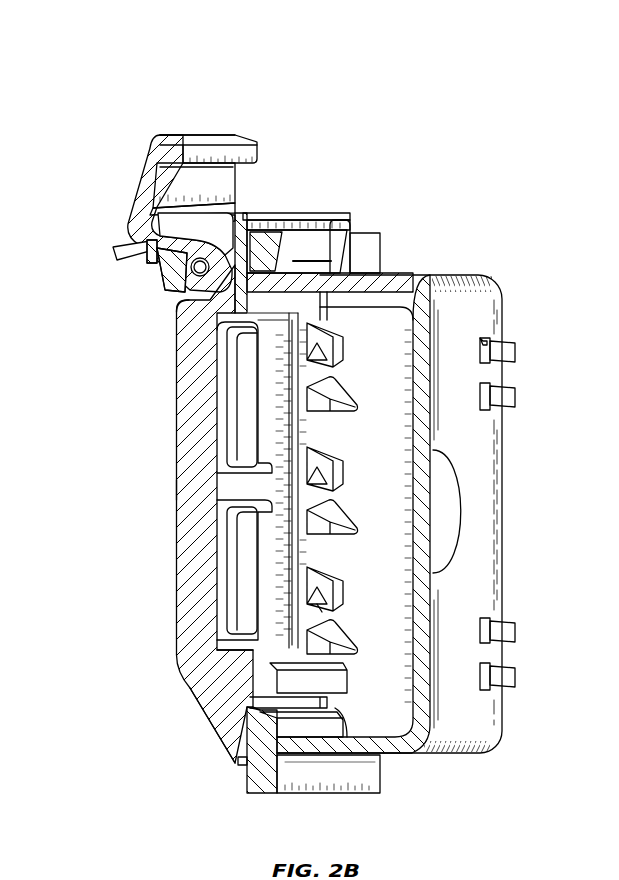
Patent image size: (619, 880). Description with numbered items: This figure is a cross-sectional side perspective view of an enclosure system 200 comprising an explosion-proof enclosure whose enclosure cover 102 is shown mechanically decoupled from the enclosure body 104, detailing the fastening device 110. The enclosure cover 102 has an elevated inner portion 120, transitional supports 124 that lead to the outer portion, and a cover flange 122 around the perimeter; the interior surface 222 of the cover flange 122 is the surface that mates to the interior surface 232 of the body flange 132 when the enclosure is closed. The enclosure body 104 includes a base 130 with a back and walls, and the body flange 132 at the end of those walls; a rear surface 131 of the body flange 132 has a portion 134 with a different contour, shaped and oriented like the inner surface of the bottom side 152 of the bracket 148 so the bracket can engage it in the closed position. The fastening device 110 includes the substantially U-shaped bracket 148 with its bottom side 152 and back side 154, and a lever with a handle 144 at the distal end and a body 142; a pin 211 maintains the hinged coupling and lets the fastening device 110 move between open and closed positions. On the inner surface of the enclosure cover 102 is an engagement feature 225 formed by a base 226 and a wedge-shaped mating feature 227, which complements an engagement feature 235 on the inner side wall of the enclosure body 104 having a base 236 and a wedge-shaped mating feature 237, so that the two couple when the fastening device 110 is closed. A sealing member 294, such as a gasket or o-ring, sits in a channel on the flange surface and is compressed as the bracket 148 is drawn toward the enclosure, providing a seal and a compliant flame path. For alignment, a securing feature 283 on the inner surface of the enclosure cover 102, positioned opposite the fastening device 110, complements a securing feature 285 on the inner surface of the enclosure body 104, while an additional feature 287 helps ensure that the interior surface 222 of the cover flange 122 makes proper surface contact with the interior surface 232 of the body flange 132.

The enclosure system 200 is at (468, 125).
The fastening device 110 is at (170, 108).
The enclosure cover 102 is at (174, 457).
The enclosure body 104 is at (540, 290).
The elevated inner portion 120 is at (177, 490).
The cover flange 122 is at (258, 208).
The transitional support 124 is at (197, 707).
The base 130 is at (463, 753).
The rear surface 131 is at (365, 768).
The body flange 132 is at (367, 233).
The portion 134 is at (297, 251).
The body 142 is at (195, 274).
The handle 144 is at (125, 249).
The bracket 148 is at (240, 127).
The bottom side 152 is at (203, 140).
The back side 154 is at (158, 183).
The pin 211 is at (180, 308).
The interior surface 222 is at (325, 232).
The engagement feature 225 is at (350, 348).
The base 226 is at (320, 320).
The mating feature 227 is at (323, 330).
The interior surface 232 is at (247, 783).
The engagement feature 235 is at (340, 538).
The base 236 is at (318, 658).
The mating feature 237 is at (343, 602).
The securing feature 283 is at (347, 668).
The securing feature 285 is at (257, 723).
The additional feature 287 is at (262, 690).
The sealing member 294 is at (300, 217).